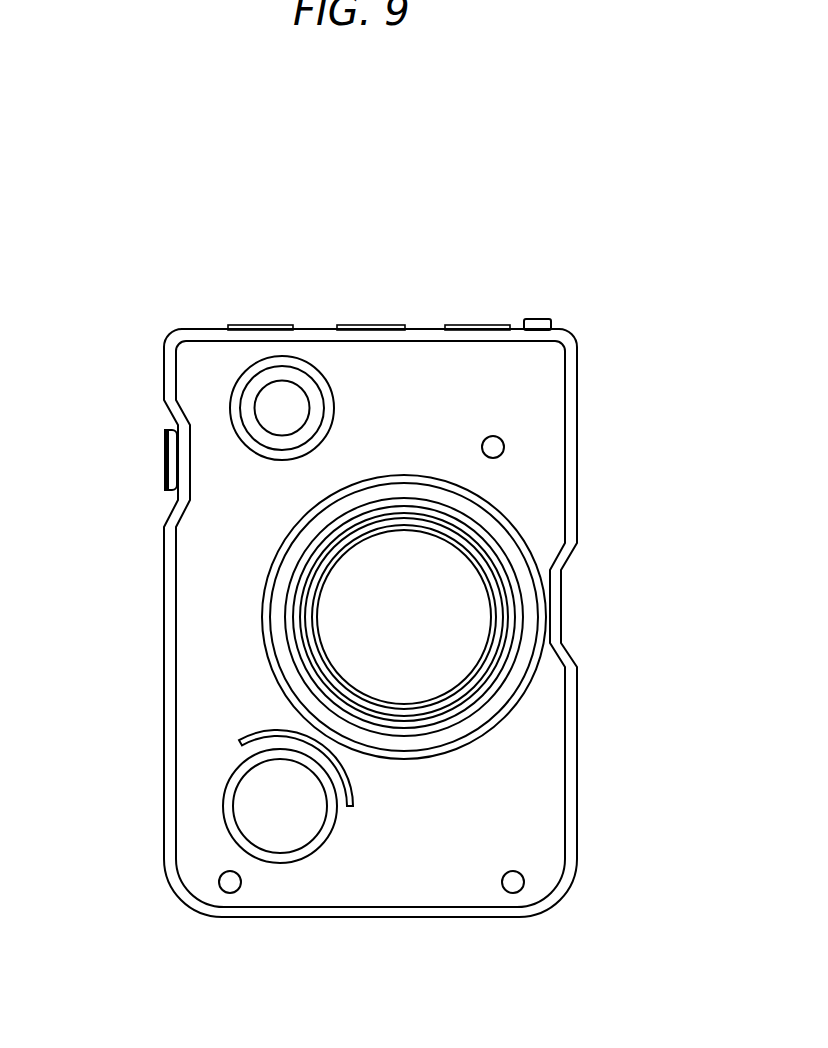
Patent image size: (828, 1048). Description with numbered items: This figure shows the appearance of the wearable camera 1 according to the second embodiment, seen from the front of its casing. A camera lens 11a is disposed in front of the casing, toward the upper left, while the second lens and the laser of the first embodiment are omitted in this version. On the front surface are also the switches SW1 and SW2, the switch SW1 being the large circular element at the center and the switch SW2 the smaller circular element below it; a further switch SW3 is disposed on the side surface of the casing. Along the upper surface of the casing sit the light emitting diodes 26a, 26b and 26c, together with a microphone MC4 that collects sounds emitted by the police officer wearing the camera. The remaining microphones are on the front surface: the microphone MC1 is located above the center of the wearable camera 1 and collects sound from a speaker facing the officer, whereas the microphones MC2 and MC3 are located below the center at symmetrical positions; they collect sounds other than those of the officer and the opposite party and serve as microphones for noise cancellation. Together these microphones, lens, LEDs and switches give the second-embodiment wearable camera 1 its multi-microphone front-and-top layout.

The wearable camera 1 is at (392, 256).
The camera lens 11a is at (237, 378).
The light emitting diode 26a is at (242, 326).
The light emitting diode 26b is at (350, 326).
The light emitting diode 26c is at (457, 326).
The microphone MC4 is at (545, 318).
The microphone MC1 is at (505, 441).
The microphone MC2 is at (230, 893).
The microphone MC3 is at (513, 893).
The switch SW1 is at (485, 638).
The switch SW2 is at (275, 810).
The switch SW3 is at (165, 456).